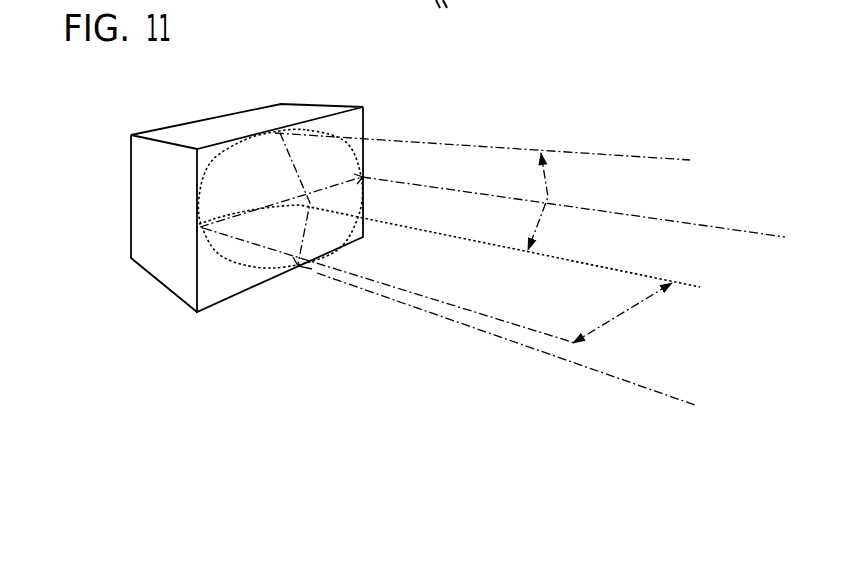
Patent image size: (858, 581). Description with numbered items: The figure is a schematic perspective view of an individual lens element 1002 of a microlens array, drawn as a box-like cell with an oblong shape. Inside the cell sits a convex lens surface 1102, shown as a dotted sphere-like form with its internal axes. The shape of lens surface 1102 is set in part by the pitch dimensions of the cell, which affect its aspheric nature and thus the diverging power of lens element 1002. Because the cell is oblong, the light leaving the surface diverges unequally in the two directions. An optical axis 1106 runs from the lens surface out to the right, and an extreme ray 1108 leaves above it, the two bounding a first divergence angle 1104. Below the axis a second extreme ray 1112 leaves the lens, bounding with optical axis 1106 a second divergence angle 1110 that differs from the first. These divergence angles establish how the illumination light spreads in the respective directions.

The lens element 1002 is at (483, 97).
The convex lens surface 1102 is at (302, 132).
The first divergence angle 1104 is at (562, 193).
The optical axis 1106 is at (692, 286).
The extreme ray 1108 is at (550, 152).
The second divergence angle 1110 is at (637, 330).
The extreme ray 1112 is at (513, 322).